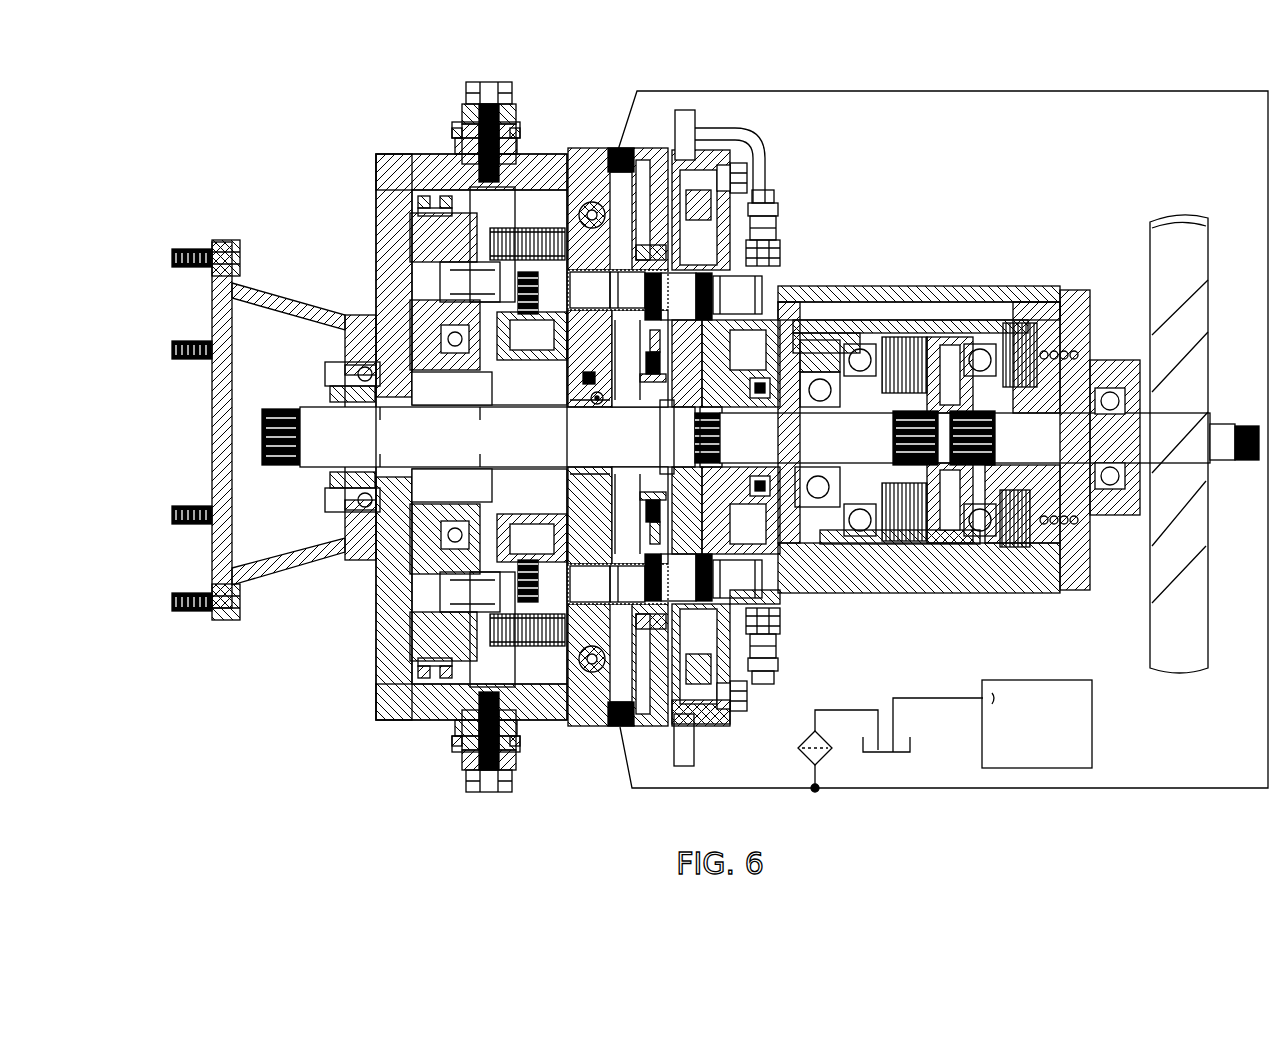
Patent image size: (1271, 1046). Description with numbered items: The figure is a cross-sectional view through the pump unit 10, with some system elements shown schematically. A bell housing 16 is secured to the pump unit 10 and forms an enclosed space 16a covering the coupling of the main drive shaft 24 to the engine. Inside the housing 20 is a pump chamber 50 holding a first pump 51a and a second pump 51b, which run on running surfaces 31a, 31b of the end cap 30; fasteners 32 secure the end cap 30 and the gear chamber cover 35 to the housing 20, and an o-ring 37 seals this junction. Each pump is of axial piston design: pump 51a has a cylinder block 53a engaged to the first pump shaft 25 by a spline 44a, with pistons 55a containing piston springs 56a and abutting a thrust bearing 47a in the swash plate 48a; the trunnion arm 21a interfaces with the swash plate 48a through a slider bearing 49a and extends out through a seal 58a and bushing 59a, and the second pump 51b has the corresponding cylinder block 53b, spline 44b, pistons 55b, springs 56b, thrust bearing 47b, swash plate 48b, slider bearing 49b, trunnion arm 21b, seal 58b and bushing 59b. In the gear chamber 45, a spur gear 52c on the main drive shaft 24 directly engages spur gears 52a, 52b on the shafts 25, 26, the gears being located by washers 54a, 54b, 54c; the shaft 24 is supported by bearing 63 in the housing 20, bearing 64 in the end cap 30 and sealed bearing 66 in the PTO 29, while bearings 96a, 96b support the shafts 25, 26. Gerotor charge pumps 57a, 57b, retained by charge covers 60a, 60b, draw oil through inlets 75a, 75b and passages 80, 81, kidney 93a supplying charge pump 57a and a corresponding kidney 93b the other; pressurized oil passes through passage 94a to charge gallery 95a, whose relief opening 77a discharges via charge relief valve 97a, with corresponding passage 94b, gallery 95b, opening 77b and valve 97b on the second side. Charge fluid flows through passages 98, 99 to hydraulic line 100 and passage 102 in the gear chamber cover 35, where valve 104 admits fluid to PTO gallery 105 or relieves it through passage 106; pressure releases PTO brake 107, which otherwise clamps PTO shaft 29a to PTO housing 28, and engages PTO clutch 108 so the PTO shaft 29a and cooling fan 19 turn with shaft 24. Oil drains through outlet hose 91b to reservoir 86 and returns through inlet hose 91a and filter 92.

The pump unit 10 is at (250, 110).
The bell housing 16 is at (276, 302).
The enclosed space 16a is at (250, 368).
The cooling fan 19 is at (1165, 491).
The housing 20 is at (376, 708).
The trunnion arm 21a is at (478, 128).
The trunnion arm 21b is at (478, 742).
The main drive shaft 24 is at (450, 445).
The first pump shaft 25 is at (666, 305).
The second pump shaft 26 is at (666, 591).
The PTO housing 28 is at (1060, 590).
The power take off unit 29 is at (1042, 246).
The PTO shaft 29a is at (1016, 450).
The end cap 30 is at (605, 178).
The running surface 31a is at (585, 200).
The running surface 31b is at (558, 700).
The fasteners 32 is at (748, 178).
The gear chamber cover 35 is at (722, 722).
The o-ring 37 is at (688, 728).
The spline 44a is at (518, 300).
The clutch splines 44b is at (518, 575).
The gear chamber 45 is at (740, 690).
The thrust bearing 47a is at (415, 247).
The bearing support 47b is at (415, 622).
The swash plate 48a is at (430, 420).
The shaft spline 48b is at (430, 450).
The slider bearing 49a is at (418, 201).
The seal 49b is at (418, 668).
The pump chamber 50 is at (486, 220).
The first pump 51a is at (500, 380).
The second pump 51b is at (500, 495).
The spur gear 52a is at (777, 212).
The spur gear 52b is at (745, 655).
The spur gear 52c is at (730, 490).
The cylinder block 53a is at (532, 336).
The clutch piston 53b is at (532, 573).
The washer 54a is at (735, 318).
The washer 54b is at (736, 579).
The washer 54c is at (740, 407).
The axial stick pistons 55a is at (480, 380).
The bearing housing 55b is at (480, 490).
The piston spring 56a is at (535, 230).
The spring 56b is at (538, 520).
The charge pump 57a is at (778, 258).
The charge pump 57b is at (778, 600).
The seal 58a is at (462, 148).
The washer 58b is at (462, 732).
The bushing 59a is at (462, 168).
The flange ring 59b is at (455, 708).
The charge cover 60a is at (776, 236).
The charge cover 60b is at (735, 637).
The bearing 63 is at (352, 503).
The bearing 64 is at (660, 408).
The sealed bearing 66 is at (810, 480).
The charge pump inlet 75a is at (612, 150).
The charge pump inlet 75b is at (615, 728).
The charge relief opening 77a is at (622, 390).
The bolt 77b is at (622, 480).
The passage 80 is at (585, 200).
The passage 81 is at (600, 720).
The external oil reservoir 86 is at (925, 740).
The inlet hose 91a is at (980, 91).
The outlet hose 91b is at (905, 698).
The filter 92 is at (826, 755).
The kidney 93a is at (650, 170).
The passage 93b is at (655, 718).
The passage 94a is at (600, 400).
The passage 94b is at (600, 480).
The charge gallery 95a is at (630, 305).
The clutch plate 95b is at (628, 575).
The bearing 96a is at (588, 278).
The bearing 96b is at (590, 598).
The charge relief valve 97a is at (760, 365).
The gear hub 97b is at (690, 535).
The passage 98 is at (580, 378).
The passage 99 is at (588, 400).
The hydraulic line 100 is at (740, 130).
The passage 102 is at (785, 300).
The valve 104 is at (798, 407).
The PTO gallery 105 is at (925, 305).
The passage 106 is at (855, 320).
The PTO brake 107 is at (985, 570).
The PTO clutch 108 is at (900, 570).